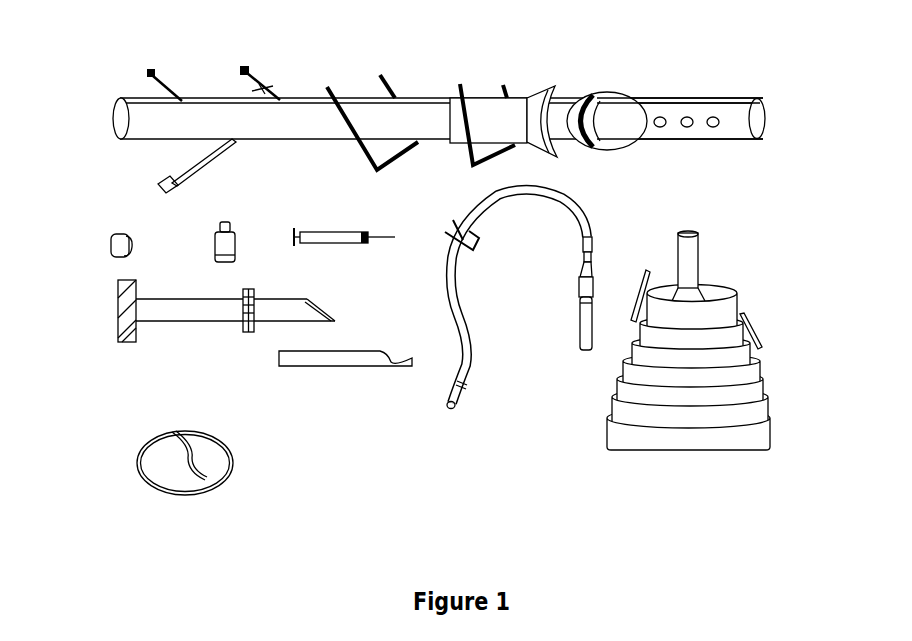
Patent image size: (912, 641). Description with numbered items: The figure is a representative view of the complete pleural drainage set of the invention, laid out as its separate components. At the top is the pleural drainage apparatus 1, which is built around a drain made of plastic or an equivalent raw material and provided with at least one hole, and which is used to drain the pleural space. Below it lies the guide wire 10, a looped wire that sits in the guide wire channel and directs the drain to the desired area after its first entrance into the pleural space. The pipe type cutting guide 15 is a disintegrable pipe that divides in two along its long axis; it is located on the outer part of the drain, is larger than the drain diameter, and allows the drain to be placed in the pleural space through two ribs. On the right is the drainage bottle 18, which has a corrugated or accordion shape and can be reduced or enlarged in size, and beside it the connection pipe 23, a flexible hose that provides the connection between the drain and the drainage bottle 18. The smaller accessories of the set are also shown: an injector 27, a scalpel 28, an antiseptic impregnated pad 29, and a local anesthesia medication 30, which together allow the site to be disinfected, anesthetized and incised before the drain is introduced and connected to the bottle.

The pleural drainage apparatus 1 is at (105, 83).
The guide wire 10 is at (470, 458).
The pipe type cutting guide 15 is at (335, 330).
The drainage bottle 18 is at (775, 452).
The connection pipe 23 is at (587, 365).
The injector 27 is at (323, 236).
The scalpel 28 is at (330, 359).
The antiseptic impregnated pad 29 is at (110, 250).
The local anesthesia medication 30 is at (215, 240).